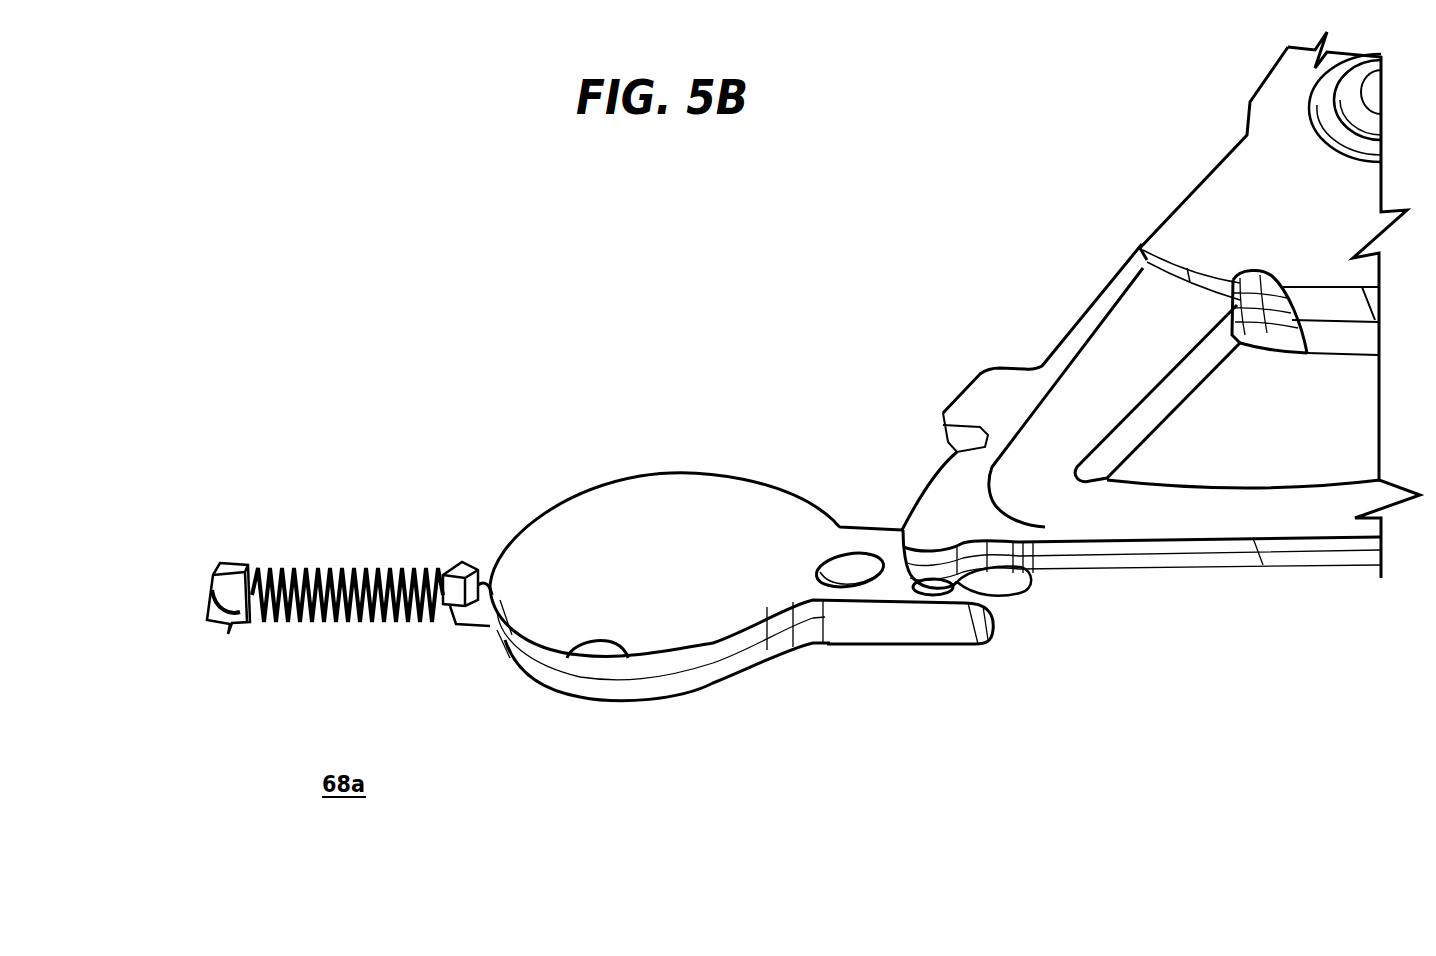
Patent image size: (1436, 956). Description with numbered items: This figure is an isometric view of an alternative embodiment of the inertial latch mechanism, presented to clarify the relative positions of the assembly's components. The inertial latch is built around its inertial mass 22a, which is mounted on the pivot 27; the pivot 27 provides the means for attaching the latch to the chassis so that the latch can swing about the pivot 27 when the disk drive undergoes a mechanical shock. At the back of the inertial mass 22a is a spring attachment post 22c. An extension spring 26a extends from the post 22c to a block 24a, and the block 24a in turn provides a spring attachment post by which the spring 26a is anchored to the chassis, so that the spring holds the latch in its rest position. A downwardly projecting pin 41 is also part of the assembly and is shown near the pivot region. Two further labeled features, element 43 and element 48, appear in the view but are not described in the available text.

The inertial mass 22a is at (578, 644).
The spring attachment post 22c is at (455, 555).
The block 24a is at (221, 558).
The extension spring 26a is at (368, 565).
The pivot 27 is at (848, 538).
The downwardly projecting pin 41 is at (930, 585).
The arm 43 is at (1100, 315).
The bracket 48 is at (932, 535).